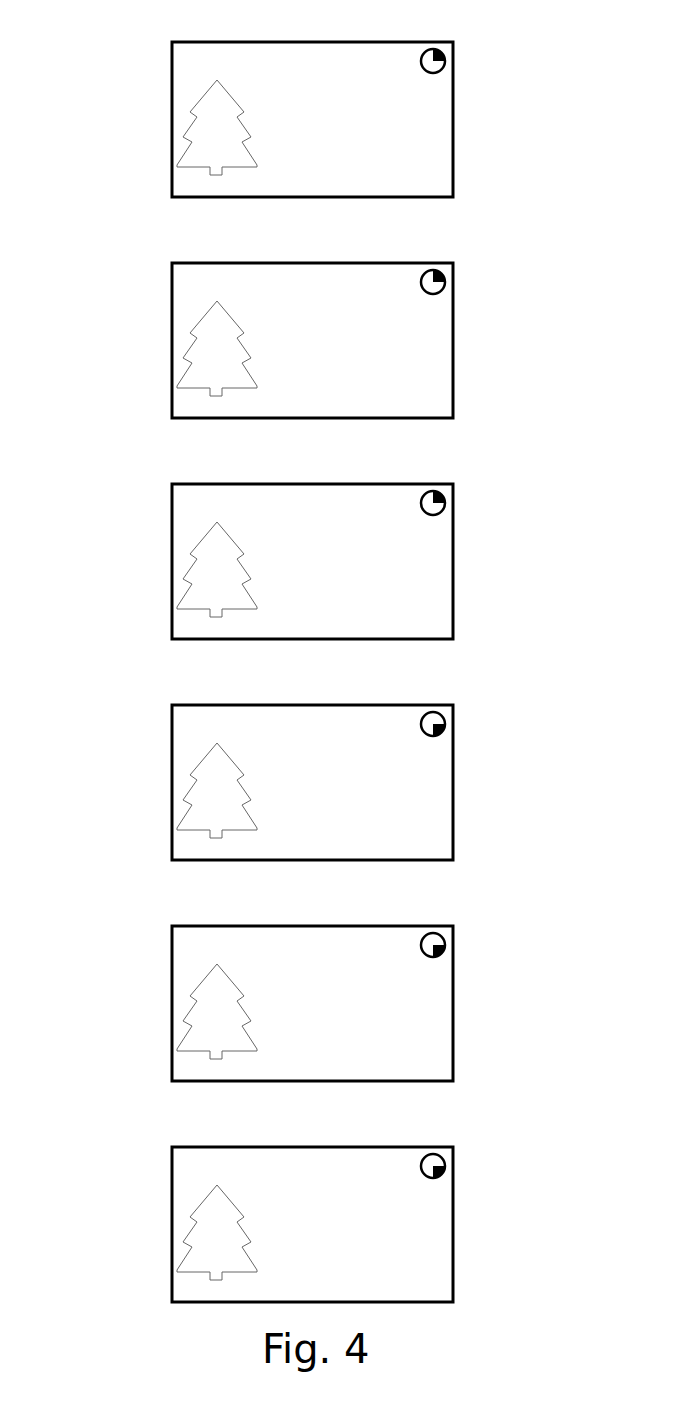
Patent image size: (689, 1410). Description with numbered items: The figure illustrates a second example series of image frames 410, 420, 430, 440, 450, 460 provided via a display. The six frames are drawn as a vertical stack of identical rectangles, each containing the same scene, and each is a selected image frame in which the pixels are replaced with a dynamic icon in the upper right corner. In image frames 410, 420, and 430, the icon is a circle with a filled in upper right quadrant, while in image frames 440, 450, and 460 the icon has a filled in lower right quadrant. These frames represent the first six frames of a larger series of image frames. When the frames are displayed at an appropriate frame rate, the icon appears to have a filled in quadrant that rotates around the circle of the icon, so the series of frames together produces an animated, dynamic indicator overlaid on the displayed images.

The image frame 410 is at (173, 42).
The image frame 420 is at (173, 263).
The image frame 430 is at (173, 484).
The image frame 440 is at (173, 705).
The image frame 450 is at (173, 926).
The image frame 460 is at (173, 1147).